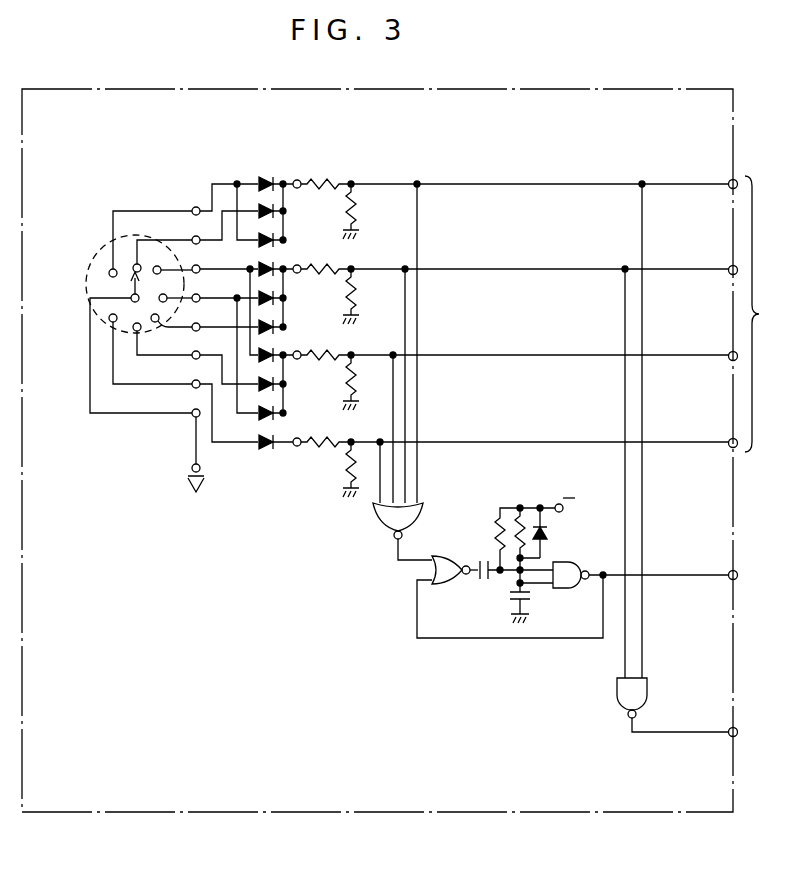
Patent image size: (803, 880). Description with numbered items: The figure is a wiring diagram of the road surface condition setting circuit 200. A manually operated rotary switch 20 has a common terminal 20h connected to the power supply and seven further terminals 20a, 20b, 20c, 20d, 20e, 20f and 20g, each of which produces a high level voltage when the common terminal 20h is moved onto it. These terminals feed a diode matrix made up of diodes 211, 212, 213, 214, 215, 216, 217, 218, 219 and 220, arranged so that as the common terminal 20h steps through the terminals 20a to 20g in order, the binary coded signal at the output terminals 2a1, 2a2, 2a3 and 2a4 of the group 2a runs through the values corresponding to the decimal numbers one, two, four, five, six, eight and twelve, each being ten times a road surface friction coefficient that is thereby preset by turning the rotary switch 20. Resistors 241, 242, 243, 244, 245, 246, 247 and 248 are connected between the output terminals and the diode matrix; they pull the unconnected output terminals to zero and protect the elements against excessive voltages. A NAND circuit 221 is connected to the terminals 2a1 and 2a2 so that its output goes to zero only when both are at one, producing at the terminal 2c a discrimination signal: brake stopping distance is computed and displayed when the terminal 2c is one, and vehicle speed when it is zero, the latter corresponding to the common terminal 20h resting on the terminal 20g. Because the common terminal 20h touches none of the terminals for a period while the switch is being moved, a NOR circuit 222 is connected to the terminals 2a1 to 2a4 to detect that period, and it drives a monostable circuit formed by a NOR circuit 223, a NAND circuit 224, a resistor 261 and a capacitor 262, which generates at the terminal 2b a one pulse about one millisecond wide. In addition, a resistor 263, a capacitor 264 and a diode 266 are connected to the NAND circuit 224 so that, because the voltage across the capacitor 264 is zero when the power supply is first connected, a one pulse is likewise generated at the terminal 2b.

The setting circuit 200 is at (300, 812).
The rotary switch 20 is at (108, 247).
The terminal 20a is at (109, 320).
The terminal 20b is at (136, 331).
The terminal 20c is at (160, 318).
The terminal 20d is at (167, 296).
The terminal 20e is at (158, 266).
The terminal 20f is at (136, 263).
The terminal 20g is at (109, 272).
The common terminal 20h is at (131, 296).
The diode 211 is at (262, 178).
The diode 212 is at (270, 215).
The diode 213 is at (272, 236).
The diode 214 is at (257, 264).
The diode 215 is at (270, 300).
The diode 216 is at (270, 328).
The diode 217 is at (270, 352).
The diode 218 is at (272, 382).
The diode 219 is at (272, 410).
The diode 220 is at (266, 445).
The NAND circuit 221 is at (617, 692).
The NOR circuit 222 is at (380, 516).
The NOR circuit 223 is at (450, 542).
The NAND circuit 224 is at (580, 562).
The resistor 241 is at (322, 178).
The resistor 242 is at (352, 208).
The resistor 243 is at (322, 266).
The resistor 244 is at (352, 292).
The resistor 245 is at (322, 354).
The resistor 246 is at (350, 385).
The resistor 247 is at (322, 440).
The resistor 248 is at (350, 462).
The resistor 261 is at (495, 520).
The capacitor 262 is at (492, 578).
The resistor 263 is at (518, 512).
The capacitor 264 is at (528, 598).
The diode 266 is at (546, 535).
The output terminals 2a is at (768, 314).
The output terminal 2a1 is at (729, 182).
The output terminal 2a2 is at (729, 268).
The output terminal 2a3 is at (729, 354).
The output terminal 2a4 is at (729, 441).
The terminal 2b is at (750, 576).
The terminal 2c is at (750, 733).